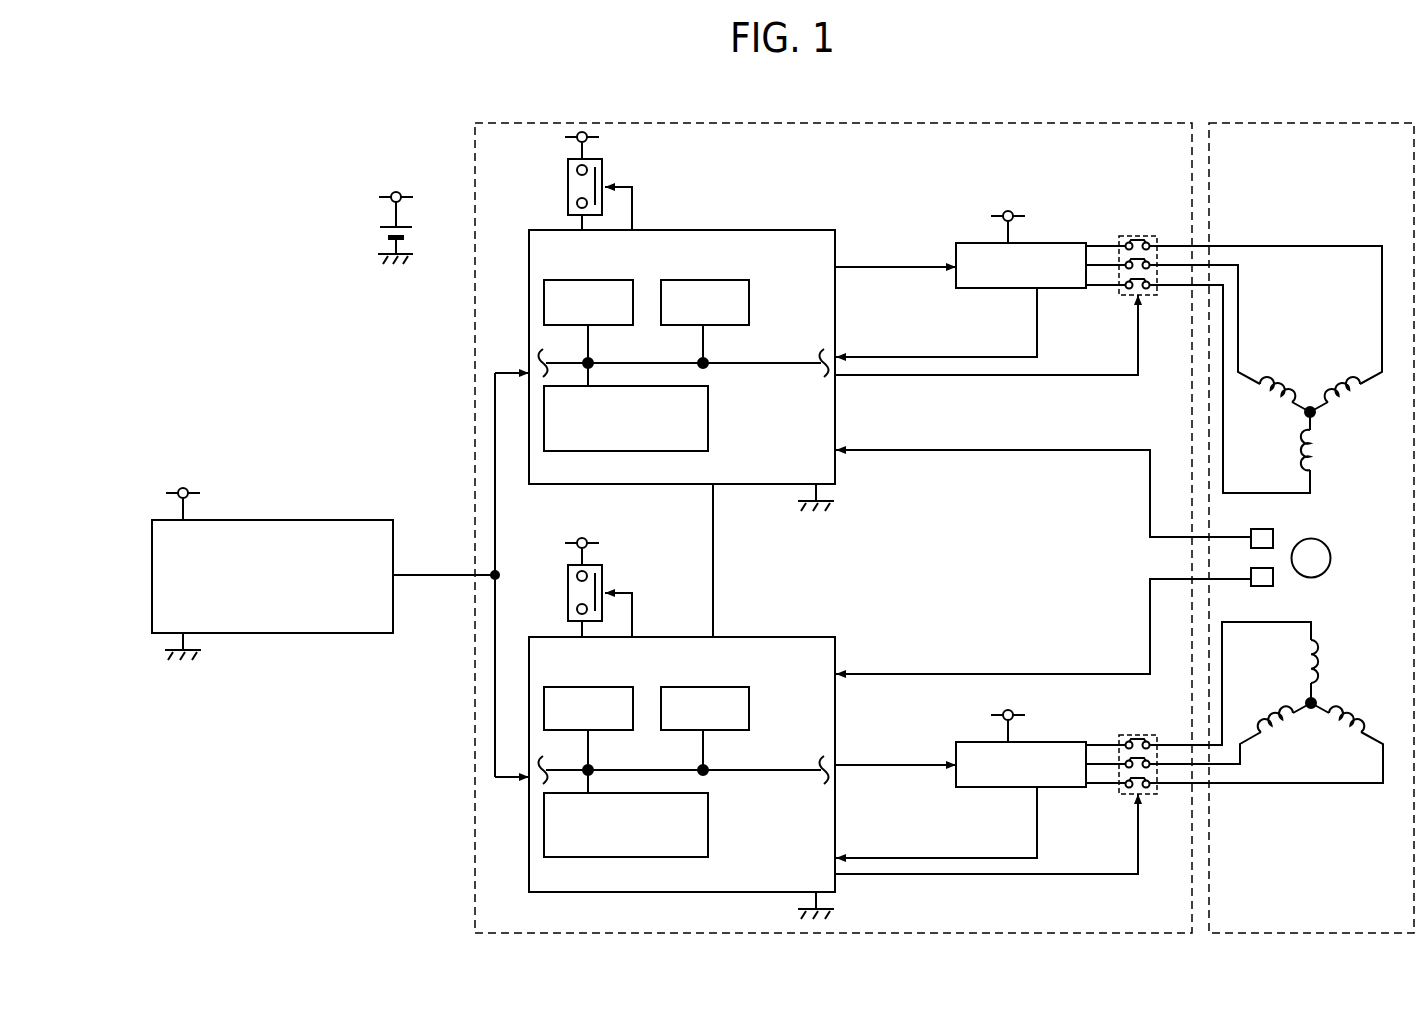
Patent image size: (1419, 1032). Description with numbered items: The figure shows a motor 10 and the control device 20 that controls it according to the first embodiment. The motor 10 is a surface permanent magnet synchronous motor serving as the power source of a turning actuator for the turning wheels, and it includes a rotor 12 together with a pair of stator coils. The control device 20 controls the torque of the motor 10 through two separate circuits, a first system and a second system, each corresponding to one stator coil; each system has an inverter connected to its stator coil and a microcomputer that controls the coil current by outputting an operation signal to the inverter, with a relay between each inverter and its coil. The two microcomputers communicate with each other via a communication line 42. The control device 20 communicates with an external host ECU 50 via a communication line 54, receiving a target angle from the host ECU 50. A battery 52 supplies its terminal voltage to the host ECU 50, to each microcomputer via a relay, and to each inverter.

The motor 10 is at (1337, 123).
The rotor 12 is at (1331, 558).
The control device 20 is at (1127, 123).
The communication line 42 is at (713, 548).
The host ECU 50 is at (318, 520).
The battery 52 is at (388, 224).
The communication line 54 is at (455, 582).